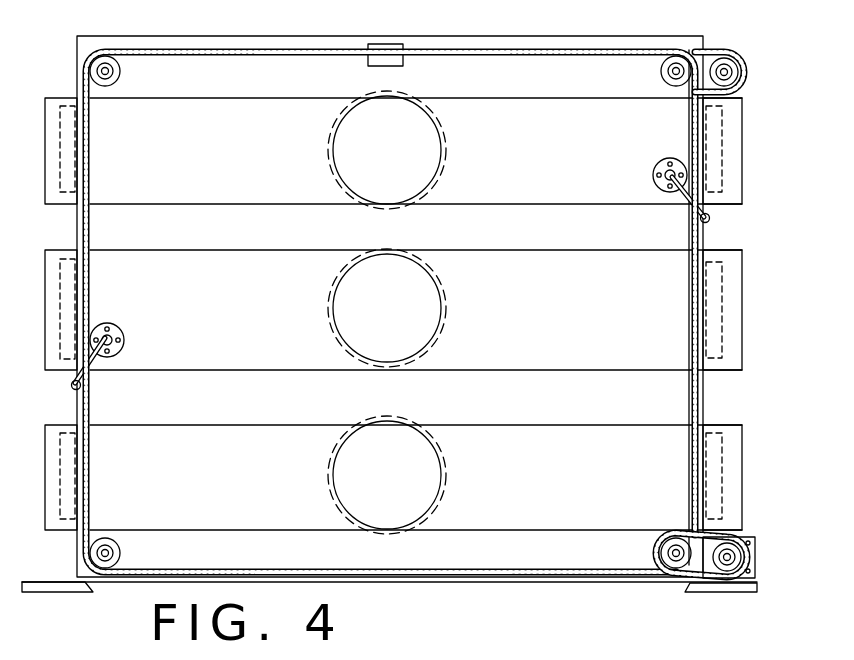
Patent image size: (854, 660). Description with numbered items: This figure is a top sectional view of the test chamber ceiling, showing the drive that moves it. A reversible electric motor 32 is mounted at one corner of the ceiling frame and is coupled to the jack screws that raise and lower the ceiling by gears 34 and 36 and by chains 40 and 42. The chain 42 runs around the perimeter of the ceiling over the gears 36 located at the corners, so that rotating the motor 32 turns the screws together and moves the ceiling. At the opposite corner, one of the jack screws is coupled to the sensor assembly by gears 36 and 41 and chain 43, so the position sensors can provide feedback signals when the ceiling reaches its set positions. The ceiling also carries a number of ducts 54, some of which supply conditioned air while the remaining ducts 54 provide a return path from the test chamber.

The reversible electric motor 32 is at (756, 552).
The gear 34 is at (718, 560).
The gear 36 is at (121, 71).
The chain 40 is at (712, 542).
The gear 41 is at (742, 78).
The chain 42 is at (272, 49).
The chain 43 is at (712, 50).
The duct 54 is at (447, 177).